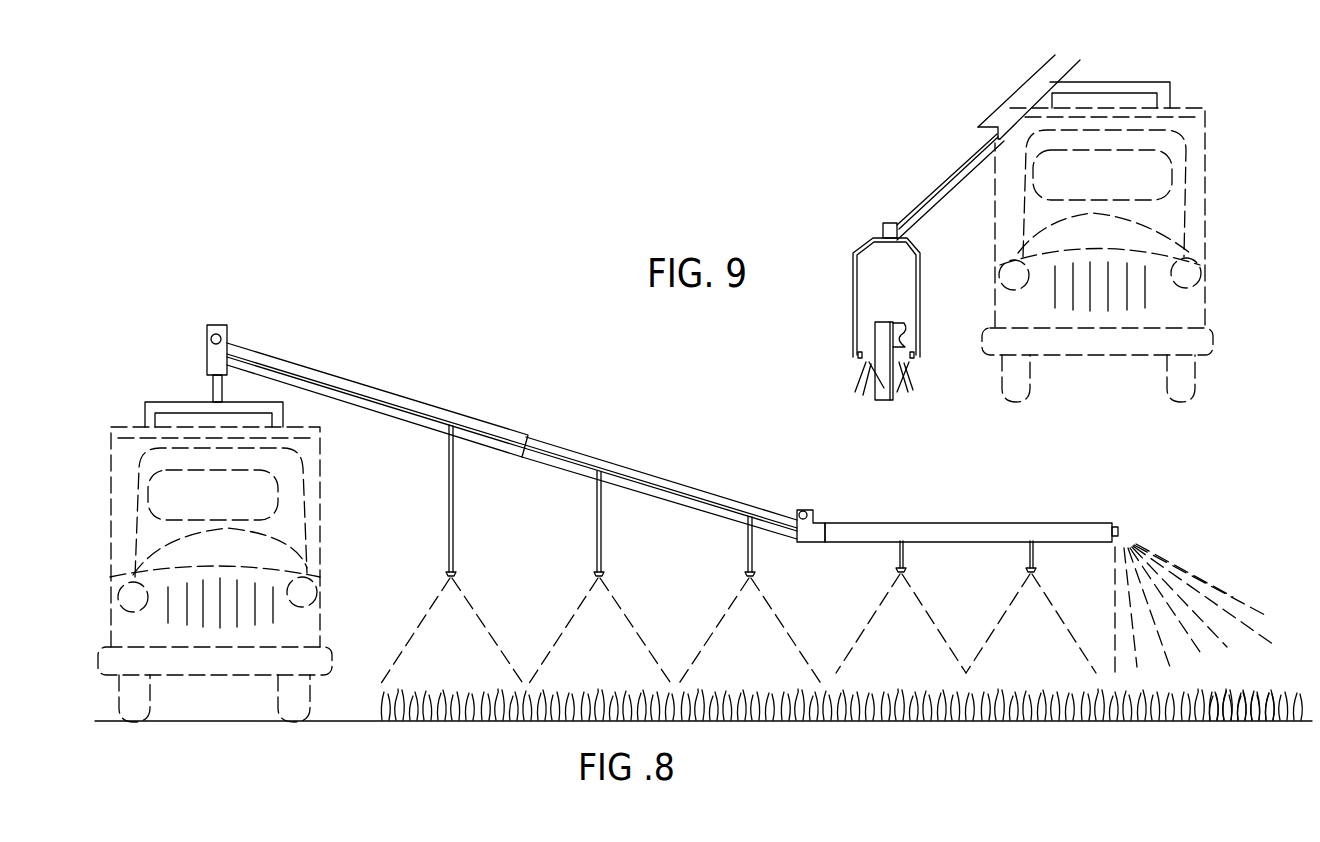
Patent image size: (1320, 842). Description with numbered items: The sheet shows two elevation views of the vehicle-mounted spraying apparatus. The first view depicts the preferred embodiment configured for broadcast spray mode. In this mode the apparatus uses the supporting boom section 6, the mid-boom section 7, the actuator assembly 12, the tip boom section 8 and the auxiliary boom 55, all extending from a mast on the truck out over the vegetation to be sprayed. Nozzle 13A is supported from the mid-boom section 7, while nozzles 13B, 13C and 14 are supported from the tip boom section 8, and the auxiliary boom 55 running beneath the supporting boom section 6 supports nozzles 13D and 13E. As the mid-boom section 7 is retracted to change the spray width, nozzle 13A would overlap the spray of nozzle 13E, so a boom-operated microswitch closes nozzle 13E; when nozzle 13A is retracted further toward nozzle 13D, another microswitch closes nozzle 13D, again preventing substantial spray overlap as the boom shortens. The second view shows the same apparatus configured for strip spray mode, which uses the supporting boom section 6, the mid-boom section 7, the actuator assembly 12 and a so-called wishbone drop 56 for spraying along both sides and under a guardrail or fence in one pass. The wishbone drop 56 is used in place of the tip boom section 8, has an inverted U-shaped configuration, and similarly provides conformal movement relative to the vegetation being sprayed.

In FIG. 8, the supporting boom section 6 is at (462, 414).
In FIG. 9, the supporting boom section 6 is at (1019, 98).
In FIG. 8, the mid-boom section 7 is at (677, 484).
In FIG. 9, the mid-boom section 7 is at (934, 172).
In FIG. 8, the tip boom section 8 is at (975, 522).
In FIG. 8, the actuator assembly 12 is at (820, 510).
In FIG. 9, the actuator assembly 12 is at (882, 229).
In FIG. 8, the nozzle 14 is at (1119, 532).
In FIG. 8, the auxiliary boom 55 is at (428, 425).
In FIG. 9, the wishbone drop 56 is at (853, 280).
In FIG. 8, the nozzle 13A is at (754, 565).
In FIG. 8, the nozzle 13B is at (905, 563).
In FIG. 8, the nozzle 13C is at (1036, 563).
In FIG. 8, the nozzle 13D is at (456, 566).
In FIG. 8, the nozzle 13E is at (602, 565).